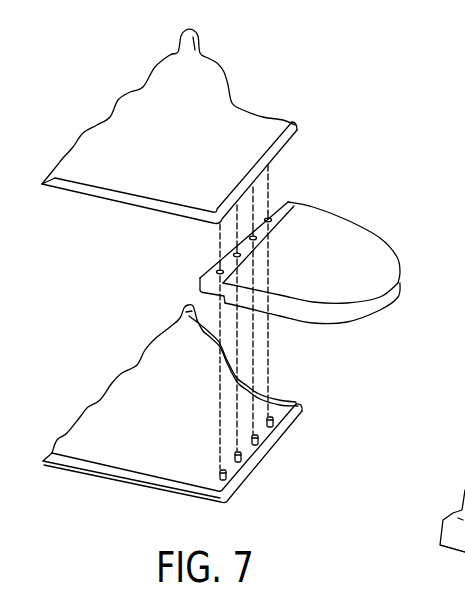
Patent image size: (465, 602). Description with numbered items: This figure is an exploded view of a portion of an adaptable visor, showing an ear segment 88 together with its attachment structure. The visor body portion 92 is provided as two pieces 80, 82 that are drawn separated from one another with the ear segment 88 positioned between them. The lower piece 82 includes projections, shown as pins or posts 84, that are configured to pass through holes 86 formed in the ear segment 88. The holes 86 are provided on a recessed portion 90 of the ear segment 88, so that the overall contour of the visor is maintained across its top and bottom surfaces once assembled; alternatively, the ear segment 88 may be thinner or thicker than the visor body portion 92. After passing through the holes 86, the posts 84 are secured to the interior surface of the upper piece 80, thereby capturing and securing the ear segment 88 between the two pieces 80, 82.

The piece 80 is at (265, 128).
The piece 82 is at (162, 432).
The pins or posts 84 is at (277, 424).
The holes 86 is at (272, 218).
The ear segment 88 is at (313, 272).
The recessed portion 90 is at (206, 273).
The visor body portion 92 is at (88, 101).